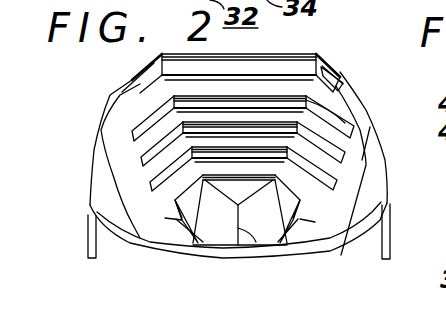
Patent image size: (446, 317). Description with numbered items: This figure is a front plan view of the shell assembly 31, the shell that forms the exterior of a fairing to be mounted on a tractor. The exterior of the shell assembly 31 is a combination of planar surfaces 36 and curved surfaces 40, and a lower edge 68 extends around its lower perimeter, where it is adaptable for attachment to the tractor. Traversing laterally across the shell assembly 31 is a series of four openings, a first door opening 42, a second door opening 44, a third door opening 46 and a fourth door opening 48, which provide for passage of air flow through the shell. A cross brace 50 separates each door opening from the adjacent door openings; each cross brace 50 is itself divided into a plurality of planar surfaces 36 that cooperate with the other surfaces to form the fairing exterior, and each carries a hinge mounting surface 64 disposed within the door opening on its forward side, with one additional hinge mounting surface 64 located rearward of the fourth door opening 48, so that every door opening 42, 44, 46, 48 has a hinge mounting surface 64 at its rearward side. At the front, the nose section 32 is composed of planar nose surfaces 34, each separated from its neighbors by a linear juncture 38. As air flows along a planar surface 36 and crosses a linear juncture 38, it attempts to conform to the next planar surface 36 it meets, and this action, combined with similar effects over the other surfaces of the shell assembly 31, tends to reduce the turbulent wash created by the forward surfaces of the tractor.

The shell assembly 31 is at (93, 289).
The nose section 32 is at (227, 230).
The nose surface 34 is at (213, 219).
The planar surface 36 is at (345, 76).
The linear juncture 38 is at (272, 215).
The curved surface 40 is at (377, 180).
The first door opening 42 is at (148, 197).
The second door opening 44 is at (150, 163).
The third door opening 46 is at (140, 137).
The fourth door opening 48 is at (143, 103).
The cross brace 50 is at (352, 126).
The hinge mounting surface 64 is at (325, 66).
The lower edge 68 is at (348, 254).